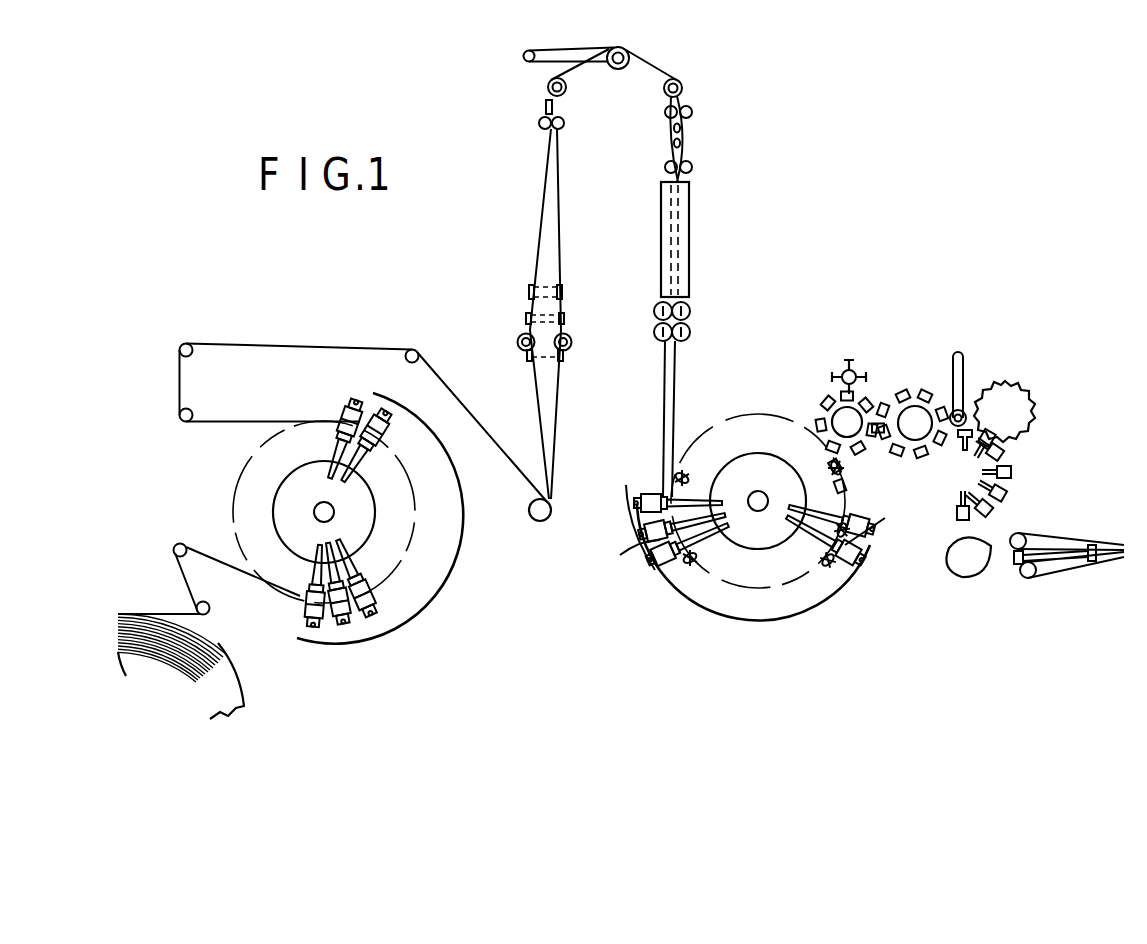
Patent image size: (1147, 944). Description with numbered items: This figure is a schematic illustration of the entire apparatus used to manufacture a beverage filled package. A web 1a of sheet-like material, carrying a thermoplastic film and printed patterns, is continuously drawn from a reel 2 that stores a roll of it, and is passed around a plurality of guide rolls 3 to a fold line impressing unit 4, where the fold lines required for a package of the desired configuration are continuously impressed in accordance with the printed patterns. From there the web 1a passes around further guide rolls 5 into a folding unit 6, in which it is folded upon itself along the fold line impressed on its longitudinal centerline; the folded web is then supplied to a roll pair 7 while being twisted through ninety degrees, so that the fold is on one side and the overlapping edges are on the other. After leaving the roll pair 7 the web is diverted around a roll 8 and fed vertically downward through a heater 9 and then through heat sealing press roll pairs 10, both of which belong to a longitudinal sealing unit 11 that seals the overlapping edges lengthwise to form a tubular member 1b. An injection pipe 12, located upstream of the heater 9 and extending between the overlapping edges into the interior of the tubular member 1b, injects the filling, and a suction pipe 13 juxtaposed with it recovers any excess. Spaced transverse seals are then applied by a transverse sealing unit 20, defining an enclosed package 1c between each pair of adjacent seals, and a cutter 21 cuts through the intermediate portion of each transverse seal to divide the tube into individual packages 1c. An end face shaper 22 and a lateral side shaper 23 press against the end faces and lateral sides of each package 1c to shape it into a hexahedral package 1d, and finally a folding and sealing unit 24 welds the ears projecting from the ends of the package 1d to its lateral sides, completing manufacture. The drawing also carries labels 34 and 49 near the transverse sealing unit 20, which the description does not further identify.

The web 1a is at (215, 549).
The tubular member 1b is at (679, 397).
The package 1c is at (862, 403).
The package 1d is at (1000, 496).
The reel 2 is at (222, 662).
The guide rolls 3 is at (175, 546).
The fold line impressing unit 4 is at (232, 477).
The guide rolls 5 is at (193, 352).
The folding unit 6 is at (514, 320).
The roll pair 7 is at (539, 124).
The roll 8 is at (621, 70).
The heater 9 is at (690, 270).
The heat sealing press roll pairs 10 is at (691, 333).
The longitudinal sealing unit 11 is at (715, 218).
The injection pipe 12 is at (683, 130).
The suction pipe 13 is at (683, 144).
The transverse sealing unit 20 is at (758, 410).
The cutter 21 is at (850, 360).
The end face shaper 22 is at (926, 388).
The lateral side shaper 23 is at (1032, 443).
The folding and sealing unit 24 is at (1067, 532).
The nozzle holders 34 is at (897, 575).
The guide arc 49 is at (815, 605).